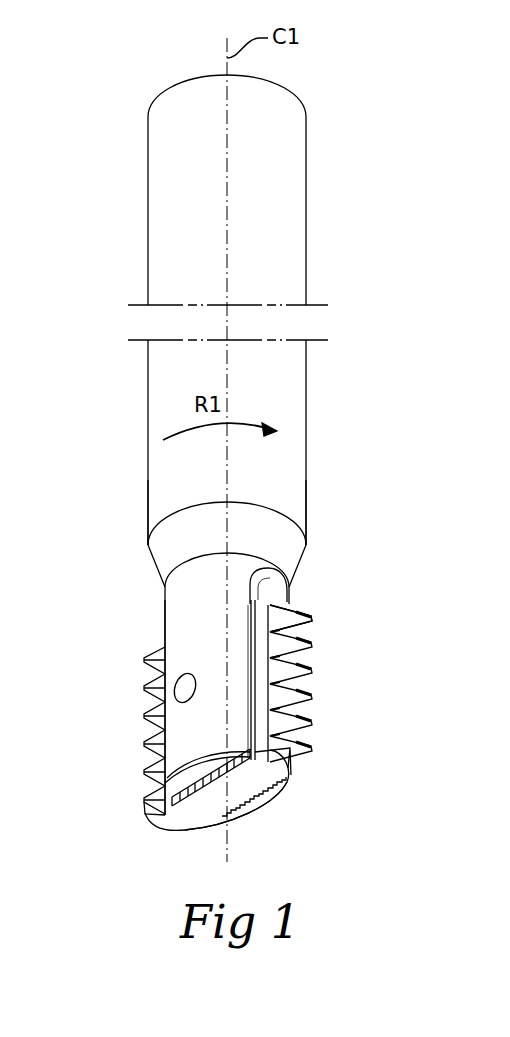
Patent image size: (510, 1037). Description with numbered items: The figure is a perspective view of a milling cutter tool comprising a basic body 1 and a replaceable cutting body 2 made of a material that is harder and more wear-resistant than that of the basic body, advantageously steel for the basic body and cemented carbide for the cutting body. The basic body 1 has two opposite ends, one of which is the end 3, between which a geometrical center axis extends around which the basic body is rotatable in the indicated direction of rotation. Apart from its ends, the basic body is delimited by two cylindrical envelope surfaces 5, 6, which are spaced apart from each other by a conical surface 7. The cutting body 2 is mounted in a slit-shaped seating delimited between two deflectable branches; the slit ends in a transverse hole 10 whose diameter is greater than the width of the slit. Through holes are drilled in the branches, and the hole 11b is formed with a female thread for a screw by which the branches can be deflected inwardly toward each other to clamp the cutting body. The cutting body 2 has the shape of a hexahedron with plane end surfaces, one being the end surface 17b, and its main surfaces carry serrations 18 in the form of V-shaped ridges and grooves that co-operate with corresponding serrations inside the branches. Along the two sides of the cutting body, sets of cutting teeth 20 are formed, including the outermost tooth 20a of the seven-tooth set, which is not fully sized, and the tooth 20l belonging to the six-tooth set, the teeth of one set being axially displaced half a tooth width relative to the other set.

The basic body 1 is at (330, 216).
The cutting body 2 is at (141, 626).
The end 3 is at (260, 808).
The cylindrical envelope surface 5 is at (214, 604).
The cylindrical envelope surface 6 is at (187, 482).
The conical surface 7 is at (201, 544).
The transverse hole 10 is at (270, 593).
The through hole 11b is at (178, 689).
The end surface 17b is at (187, 820).
The serrations 18 is at (183, 795).
The cutting teeth 20 is at (308, 723).
The outermost tooth 20a is at (148, 814).
The tooth 20l is at (312, 621).